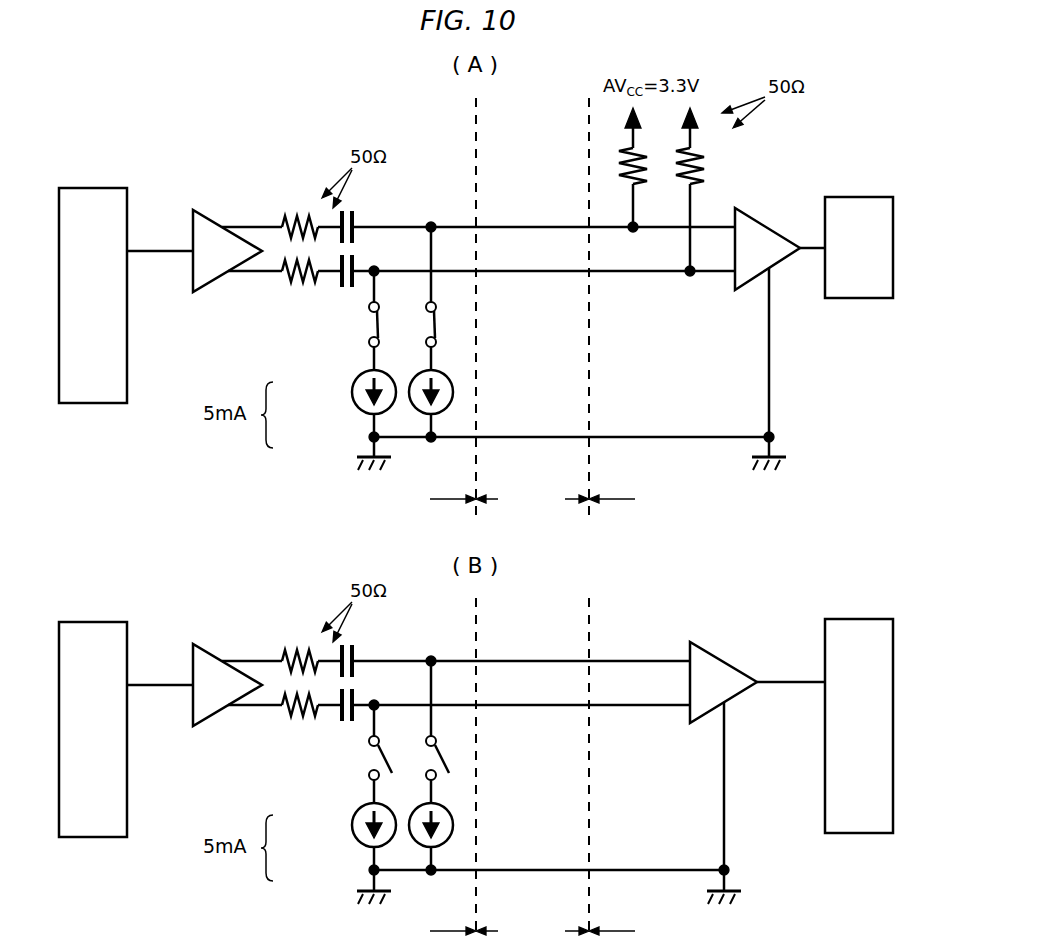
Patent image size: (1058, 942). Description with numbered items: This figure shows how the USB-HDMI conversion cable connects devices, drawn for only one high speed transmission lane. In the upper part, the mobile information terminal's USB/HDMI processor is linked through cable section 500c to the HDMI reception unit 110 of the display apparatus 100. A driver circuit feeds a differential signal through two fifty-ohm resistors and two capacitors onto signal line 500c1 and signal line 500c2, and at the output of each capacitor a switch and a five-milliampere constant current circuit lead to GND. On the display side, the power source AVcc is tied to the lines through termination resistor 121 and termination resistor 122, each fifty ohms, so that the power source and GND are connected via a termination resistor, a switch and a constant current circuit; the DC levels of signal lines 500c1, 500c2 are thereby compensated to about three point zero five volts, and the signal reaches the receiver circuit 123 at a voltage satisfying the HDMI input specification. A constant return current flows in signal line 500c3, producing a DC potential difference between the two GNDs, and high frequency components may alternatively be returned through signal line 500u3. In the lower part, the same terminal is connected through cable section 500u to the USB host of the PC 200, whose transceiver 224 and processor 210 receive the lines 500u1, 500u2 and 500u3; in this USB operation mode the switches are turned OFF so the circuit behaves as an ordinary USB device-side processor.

The signal line 500c1 is at (533, 231).
The signal line 500c2 is at (533, 276).
The signal line 500c3 is at (521, 435).
The transmission line 500u1 is at (533, 665).
The transmission line 500u2 is at (533, 710).
The signal line 500u3 is at (521, 868).
The termination resistor 121 is at (612, 152).
The termination resistor 122 is at (712, 151).
The receiver circuit 123 is at (781, 263).
The reception device 110 is at (878, 230).
The receiver 224 is at (711, 645).
The reception device 210 is at (878, 653).
The cable section 500c is at (558, 510).
The cable section 500u is at (558, 941).
The display apparatus 100 is at (687, 510).
The PC 200 is at (687, 941).